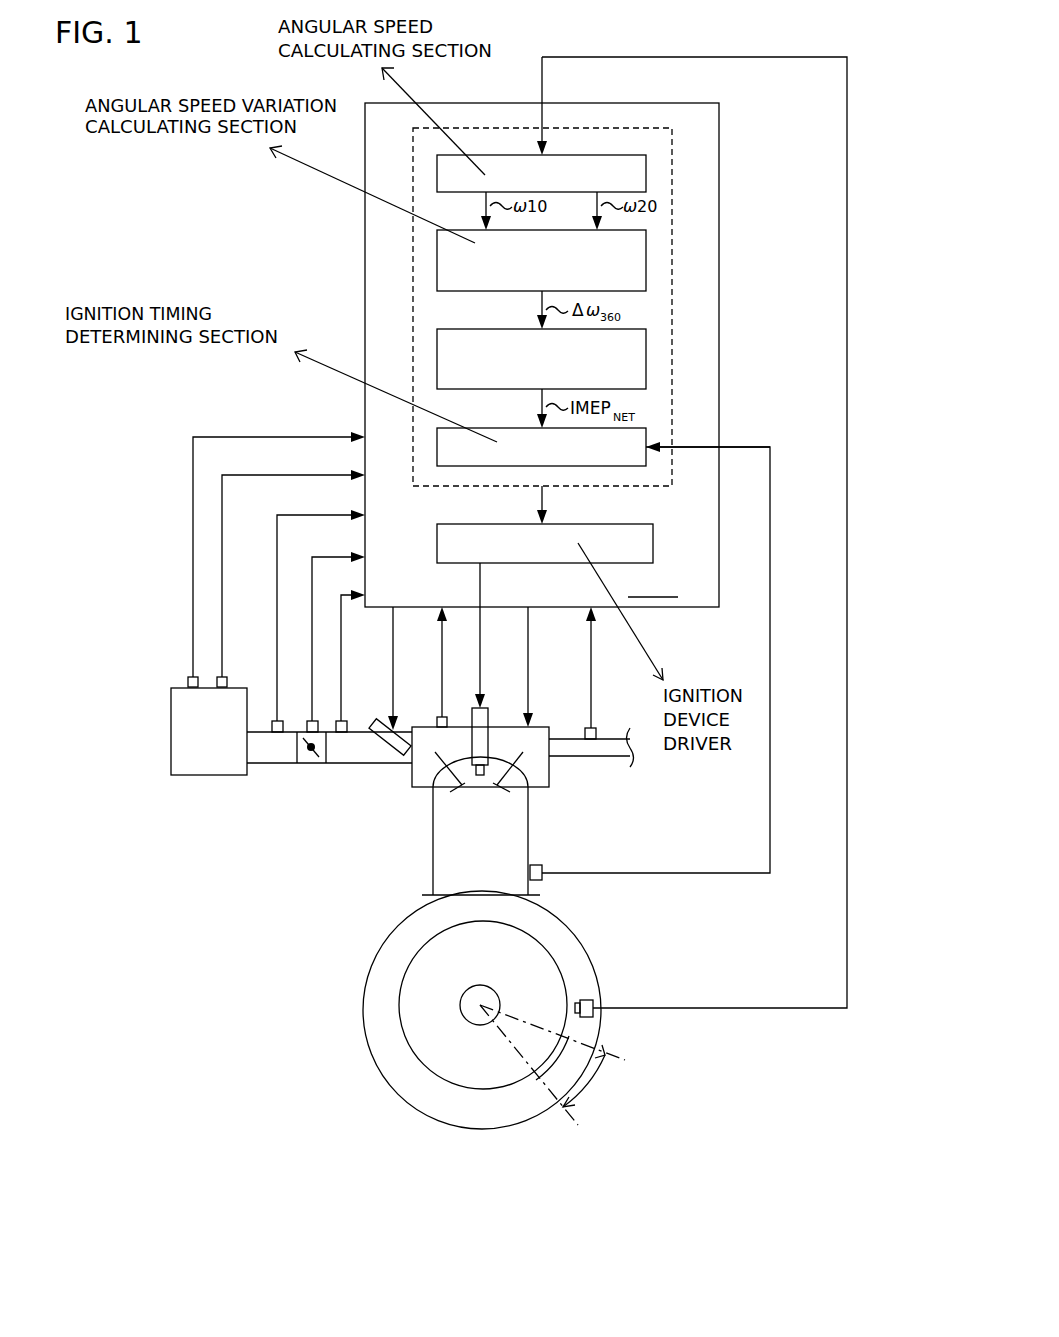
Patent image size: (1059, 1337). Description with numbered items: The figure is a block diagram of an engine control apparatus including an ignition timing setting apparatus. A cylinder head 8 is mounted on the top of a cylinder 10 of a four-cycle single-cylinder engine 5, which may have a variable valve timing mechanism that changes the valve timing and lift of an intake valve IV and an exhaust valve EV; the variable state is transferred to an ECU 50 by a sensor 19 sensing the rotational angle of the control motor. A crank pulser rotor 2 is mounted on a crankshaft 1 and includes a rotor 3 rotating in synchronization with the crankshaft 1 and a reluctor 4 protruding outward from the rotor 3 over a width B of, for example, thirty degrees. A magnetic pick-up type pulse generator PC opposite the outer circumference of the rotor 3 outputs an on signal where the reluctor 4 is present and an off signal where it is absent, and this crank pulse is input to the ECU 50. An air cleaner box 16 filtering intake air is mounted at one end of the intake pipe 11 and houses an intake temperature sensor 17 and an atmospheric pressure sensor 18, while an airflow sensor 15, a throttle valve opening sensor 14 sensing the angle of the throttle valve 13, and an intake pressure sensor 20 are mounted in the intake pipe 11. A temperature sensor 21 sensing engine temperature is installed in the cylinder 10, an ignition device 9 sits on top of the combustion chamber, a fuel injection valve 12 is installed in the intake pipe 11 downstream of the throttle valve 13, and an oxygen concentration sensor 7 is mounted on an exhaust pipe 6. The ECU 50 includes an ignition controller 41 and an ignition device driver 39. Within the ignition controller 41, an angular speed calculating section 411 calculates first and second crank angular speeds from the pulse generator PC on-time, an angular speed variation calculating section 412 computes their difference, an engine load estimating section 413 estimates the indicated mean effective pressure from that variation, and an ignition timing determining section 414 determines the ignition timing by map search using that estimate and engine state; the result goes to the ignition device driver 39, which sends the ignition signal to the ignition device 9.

The crankshaft 1 is at (480, 1007).
The crank pulser rotor 2 is at (415, 948).
The rotor 3 is at (418, 1023).
The reluctor 4 is at (538, 1070).
The engine 5 is at (582, 922).
The exhaust pipe 6 is at (583, 748).
The oxygen concentration sensor 7 is at (600, 730).
The cylinder head 8 is at (510, 738).
The ignition device 9 is at (472, 713).
The cylinder 10 is at (447, 865).
The intake pipe 11 is at (365, 752).
The fuel injection valve 12 is at (371, 718).
The throttle valve 13 is at (305, 757).
The throttle valve opening sensor 14 is at (297, 717).
The airflow sensor 15 is at (262, 717).
The air cleaner box 16 is at (208, 775).
The intake temperature sensor 17 is at (210, 677).
The atmospheric pressure sensor 18 is at (182, 677).
The sensor 19 is at (433, 717).
The intake pressure sensor 20 is at (323, 717).
The temperature sensor 21 is at (542, 862).
The ignition device driver 39 is at (437, 542).
The ignition controller 41 is at (672, 167).
The angular speed calculating section 411 is at (437, 177).
The angular speed variation calculating section 412 is at (437, 264).
The engine load estimating section 413 is at (437, 361).
The ignition timing determining section 414 is at (437, 439).
The ECU 50 is at (688, 607).
The intake valve IV is at (427, 787).
The exhaust valve EV is at (537, 787).
The pulse generator PC is at (585, 988).
The width B is at (590, 1083).